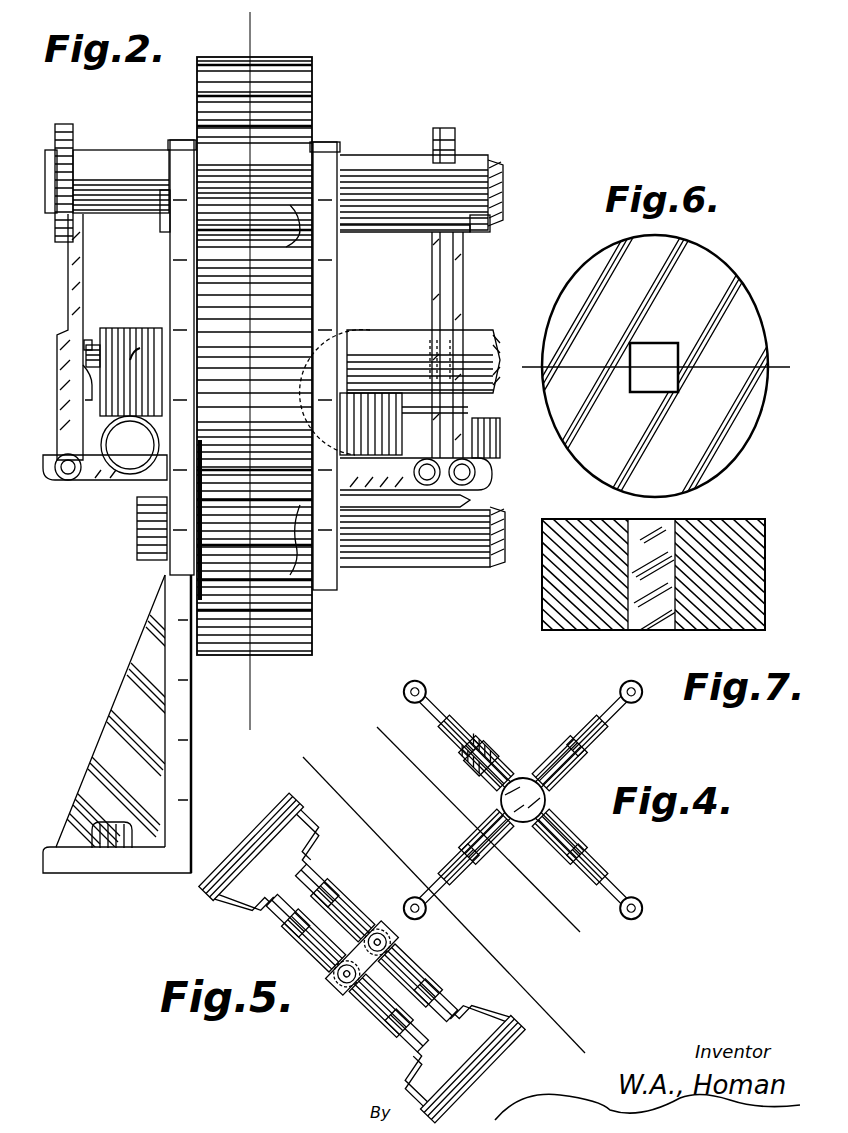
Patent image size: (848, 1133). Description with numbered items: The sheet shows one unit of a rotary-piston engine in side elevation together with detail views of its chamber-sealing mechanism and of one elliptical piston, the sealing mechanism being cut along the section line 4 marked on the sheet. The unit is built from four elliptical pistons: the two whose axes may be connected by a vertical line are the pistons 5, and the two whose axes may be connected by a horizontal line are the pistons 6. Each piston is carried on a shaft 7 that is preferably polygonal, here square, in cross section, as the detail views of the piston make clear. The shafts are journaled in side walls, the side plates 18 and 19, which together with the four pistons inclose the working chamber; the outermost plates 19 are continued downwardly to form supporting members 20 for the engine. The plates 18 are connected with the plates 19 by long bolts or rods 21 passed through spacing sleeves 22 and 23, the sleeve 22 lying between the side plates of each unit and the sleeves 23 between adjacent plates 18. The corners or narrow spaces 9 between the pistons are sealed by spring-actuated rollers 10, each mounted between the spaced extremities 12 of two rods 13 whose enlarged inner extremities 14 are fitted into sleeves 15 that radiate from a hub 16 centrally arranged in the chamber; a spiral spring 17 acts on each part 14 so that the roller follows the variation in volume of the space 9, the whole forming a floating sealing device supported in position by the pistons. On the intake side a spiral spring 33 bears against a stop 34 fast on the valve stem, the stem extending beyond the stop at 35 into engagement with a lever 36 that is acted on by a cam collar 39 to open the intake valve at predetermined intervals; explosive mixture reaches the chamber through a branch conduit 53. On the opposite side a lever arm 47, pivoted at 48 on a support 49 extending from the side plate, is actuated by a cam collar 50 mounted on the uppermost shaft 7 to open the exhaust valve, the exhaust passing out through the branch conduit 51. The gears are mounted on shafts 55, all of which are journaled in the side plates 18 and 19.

In FIG. 4, the section line 4- 4 is at (311, 750).
In FIG. 2, the elliptical pistons 5 is at (305, 72).
In FIG. 4, the elliptical pistons 5 is at (392, 745).
In FIG. 2, the elliptical pistons 6 is at (256, 378).
In FIG. 2, the shaft 7 is at (135, 162).
In FIG. 6, the shaft 7 is at (535, 358).
In FIG. 2, the narrow spaces 9 is at (252, 32).
In FIG. 4, the spring-actuated roller 10 is at (425, 682).
In FIG. 5, the spring-actuated roller 10 is at (255, 835).
In FIG. 4, the spaced extremities 12 is at (432, 705).
In FIG. 5, the spaced extremities 12 is at (518, 1012).
In FIG. 4, the rod 13 is at (452, 738).
In FIG. 5, the rod 13 is at (305, 870).
In FIG. 4, the enlarged inner extremity 14 is at (475, 725).
In FIG. 4, the sleeve 15 is at (505, 755).
In FIG. 5, the sleeve 15 is at (345, 915).
In FIG. 4, the hub 16 is at (545, 800).
In FIG. 4, the spiral spring 17 is at (512, 765).
In FIG. 2, the side wall 18 is at (330, 145).
In FIG. 2, the side wall 19 is at (180, 140).
In FIG. 2, the supporting member 20 is at (185, 690).
In FIG. 2, the long bolt or rod 21 is at (478, 232).
In FIG. 2, the spacing sleeve 22 is at (300, 247).
In FIG. 2, the spacing sleeve 23 is at (392, 230).
In FIG. 2, the spiral spring 33 is at (83, 380).
In FIG. 2, the stop 34 is at (90, 345).
In FIG. 2, the stem extension 35 is at (85, 352).
In FIG. 2, the lever 36 is at (84, 246).
In FIG. 2, the cam collar 39 is at (75, 132).
In FIG. 2, the lever arm 47 is at (448, 292).
In FIG. 2, the pivot 48 is at (476, 472).
In FIG. 2, the support 49 is at (72, 482).
In FIG. 2, the cam collar 50 is at (457, 134).
In FIG. 2, the branch pipe or conduit 51 is at (430, 420).
In FIG. 2, the branch conduit 53 is at (131, 401).
In FIG. 2, the shaft 55 is at (262, 165).